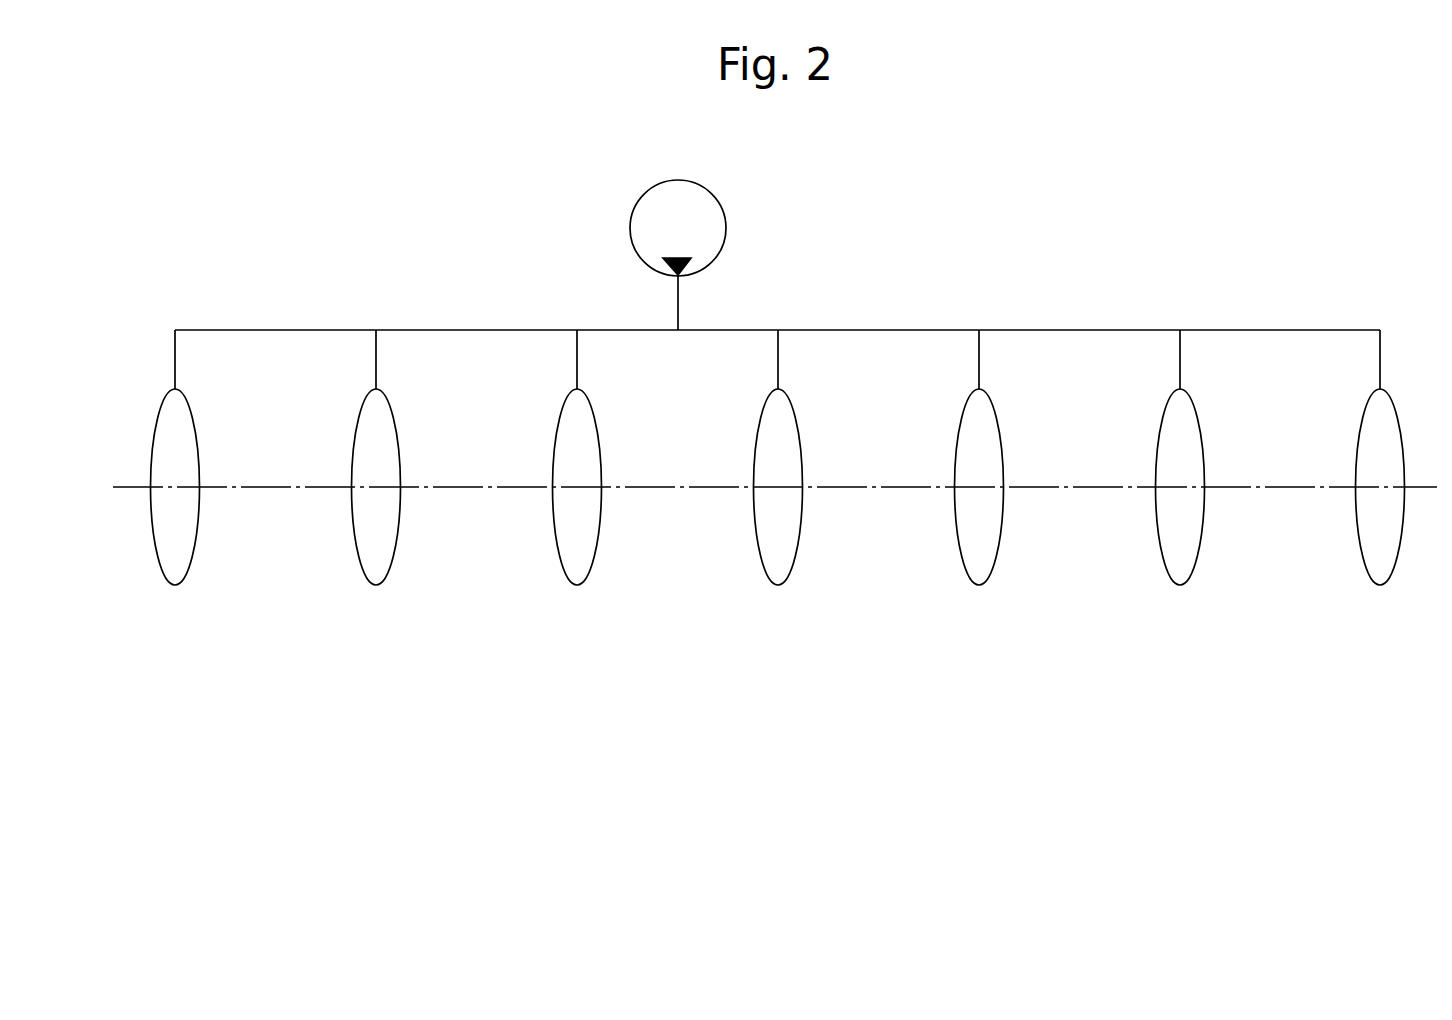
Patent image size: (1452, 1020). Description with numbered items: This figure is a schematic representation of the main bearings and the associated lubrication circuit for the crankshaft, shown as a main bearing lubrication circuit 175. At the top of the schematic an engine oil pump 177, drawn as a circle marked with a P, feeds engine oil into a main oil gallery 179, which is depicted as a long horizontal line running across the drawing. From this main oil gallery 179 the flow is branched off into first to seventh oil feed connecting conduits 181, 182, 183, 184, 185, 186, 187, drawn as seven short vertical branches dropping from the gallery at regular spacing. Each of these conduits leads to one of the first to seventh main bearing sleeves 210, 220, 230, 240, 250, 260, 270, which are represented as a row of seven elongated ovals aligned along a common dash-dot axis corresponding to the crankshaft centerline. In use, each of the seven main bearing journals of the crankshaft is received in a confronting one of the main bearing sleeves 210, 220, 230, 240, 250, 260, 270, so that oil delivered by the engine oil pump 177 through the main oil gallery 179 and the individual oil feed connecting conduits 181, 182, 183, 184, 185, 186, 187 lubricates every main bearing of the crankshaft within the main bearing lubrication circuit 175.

The main bearing lubrication circuit 175 is at (477, 237).
The engine oil pump 177 is at (713, 193).
The main oil gallery 179 is at (828, 330).
The first oil feed connecting conduit 181 is at (175, 362).
The second oil feed connecting conduit 182 is at (376, 361).
The third oil feed connecting conduit 183 is at (577, 362).
The fourth oil feed connecting conduit 184 is at (778, 362).
The fifth oil feed connecting conduit 185 is at (979, 361).
The sixth oil feed connecting conduit 186 is at (1180, 361).
The seventh oil feed connecting conduit 187 is at (1380, 361).
The first main bearing sleeve 210 is at (175, 585).
The second main bearing sleeve 220 is at (376, 585).
The third main bearing sleeve 230 is at (577, 585).
The fourth main bearing sleeve 240 is at (778, 585).
The fifth main bearing sleeve 250 is at (979, 585).
The sixth main bearing sleeve 260 is at (1180, 585).
The seventh main bearing sleeve 270 is at (1380, 585).